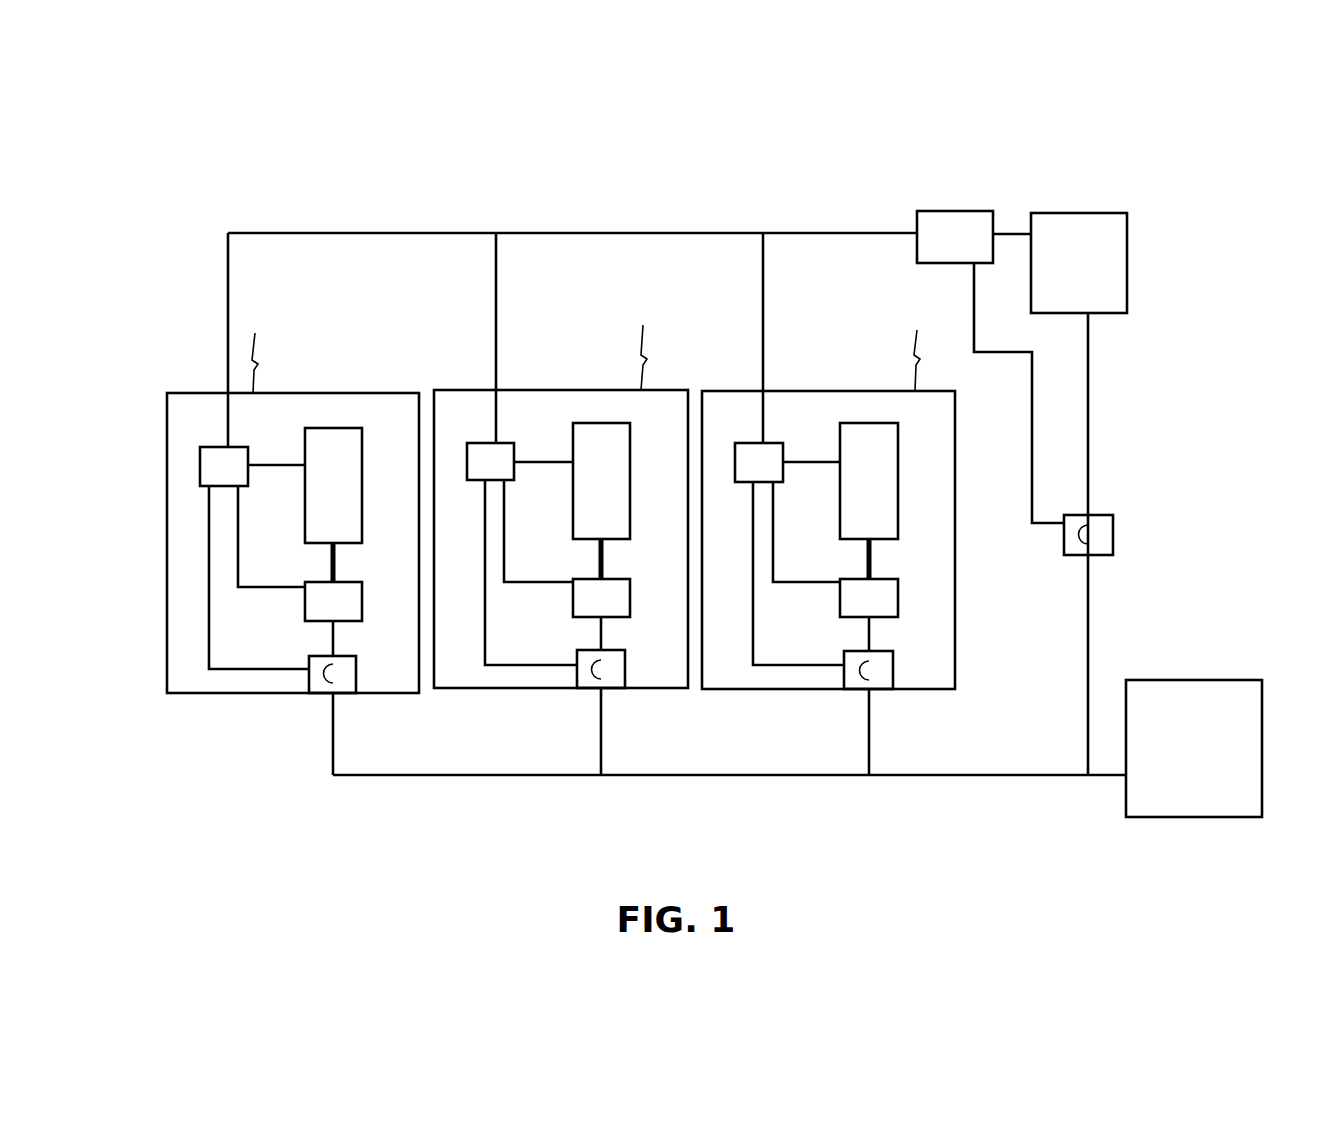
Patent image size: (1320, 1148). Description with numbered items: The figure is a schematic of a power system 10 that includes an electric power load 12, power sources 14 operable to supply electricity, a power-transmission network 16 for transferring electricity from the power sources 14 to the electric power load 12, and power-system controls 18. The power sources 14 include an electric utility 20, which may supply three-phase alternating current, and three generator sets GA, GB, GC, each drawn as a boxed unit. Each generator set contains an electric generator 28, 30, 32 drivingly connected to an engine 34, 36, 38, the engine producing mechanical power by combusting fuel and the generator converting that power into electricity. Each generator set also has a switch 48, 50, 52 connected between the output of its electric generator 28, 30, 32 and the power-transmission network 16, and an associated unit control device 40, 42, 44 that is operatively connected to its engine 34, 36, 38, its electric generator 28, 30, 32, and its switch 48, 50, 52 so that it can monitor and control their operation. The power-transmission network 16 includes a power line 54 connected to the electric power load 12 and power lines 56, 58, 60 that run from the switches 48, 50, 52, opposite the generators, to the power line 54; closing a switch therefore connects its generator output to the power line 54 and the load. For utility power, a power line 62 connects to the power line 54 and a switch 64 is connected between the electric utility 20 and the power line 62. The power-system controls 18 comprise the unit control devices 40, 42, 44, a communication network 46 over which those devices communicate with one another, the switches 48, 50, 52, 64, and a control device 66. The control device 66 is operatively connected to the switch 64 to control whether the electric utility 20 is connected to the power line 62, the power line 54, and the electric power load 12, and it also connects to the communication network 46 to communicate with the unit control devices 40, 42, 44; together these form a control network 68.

The power system 10 is at (658, 155).
The electric power load 12 is at (1181, 763).
The power sources 14 is at (323, 368).
The power-transmission network 16 is at (900, 740).
The power-system controls 18 is at (830, 215).
The electric utility 20 is at (1066, 278).
The electric generator 28 is at (300, 553).
The electric generator 30 is at (567, 548).
The electric generator 32 is at (835, 549).
The engine 34 is at (320, 502).
The engine 36 is at (588, 497).
The engine 38 is at (856, 497).
The unit control device 40 is at (210, 481).
The unit control device 42 is at (477, 477).
The unit control device 44 is at (746, 477).
The communication network 46 is at (506, 215).
The switch 48 is at (347, 677).
The switch 50 is at (614, 681).
The switch 52 is at (883, 672).
The power line 54 is at (698, 775).
The power line 56 is at (333, 748).
The power line 58 is at (601, 730).
The power line 60 is at (869, 753).
The power line 62 is at (1088, 598).
The switch 64 is at (1110, 520).
The control device 66 is at (942, 252).
The control network 68 is at (751, 215).